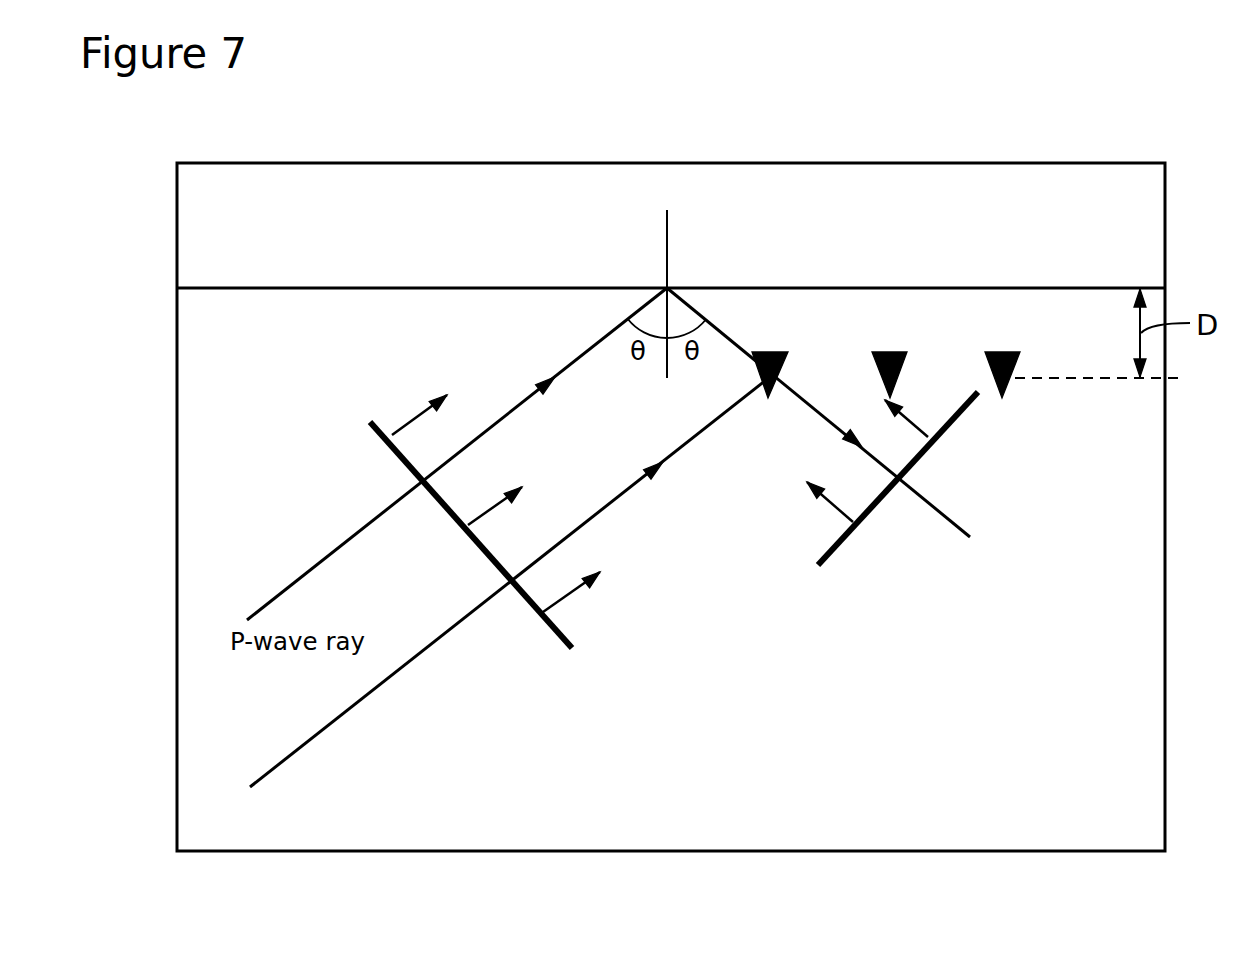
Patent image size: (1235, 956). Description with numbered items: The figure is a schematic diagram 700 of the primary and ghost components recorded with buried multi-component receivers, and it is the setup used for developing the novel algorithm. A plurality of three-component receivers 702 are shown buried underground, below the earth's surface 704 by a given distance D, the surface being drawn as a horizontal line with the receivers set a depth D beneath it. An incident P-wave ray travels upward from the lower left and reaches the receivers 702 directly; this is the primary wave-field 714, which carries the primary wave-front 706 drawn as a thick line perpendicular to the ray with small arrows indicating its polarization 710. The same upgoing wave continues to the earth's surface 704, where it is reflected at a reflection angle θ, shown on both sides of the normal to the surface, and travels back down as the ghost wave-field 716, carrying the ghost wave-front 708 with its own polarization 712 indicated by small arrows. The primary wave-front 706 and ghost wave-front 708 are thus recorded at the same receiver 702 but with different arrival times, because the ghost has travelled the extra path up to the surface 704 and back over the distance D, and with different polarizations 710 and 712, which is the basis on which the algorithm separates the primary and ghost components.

The seismic survey model 700 is at (702, 134).
The 3C receivers 702 is at (900, 352).
The earth's surface 704 is at (1020, 288).
The primary wave-front 706 is at (383, 441).
The ghost wave-front 708 is at (722, 330).
The polarization of primary wave-front 710 is at (480, 512).
The polarization of ghost wave-front 712 is at (828, 503).
The primary wave-field 714 is at (685, 442).
The ghost wave-field 716 is at (953, 517).